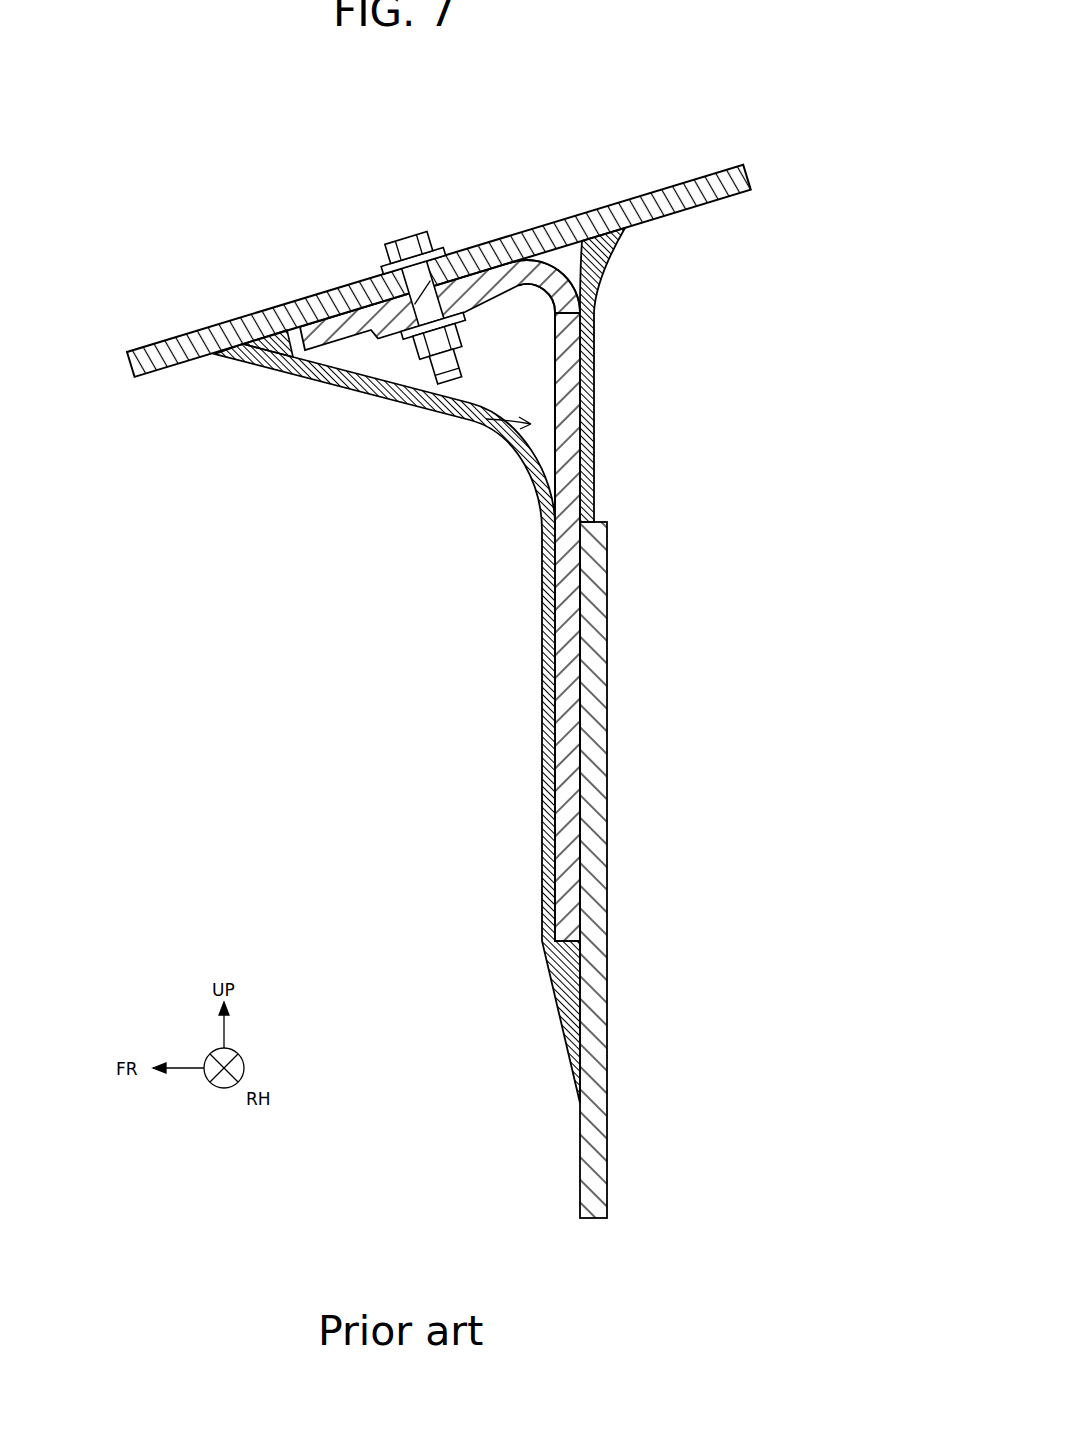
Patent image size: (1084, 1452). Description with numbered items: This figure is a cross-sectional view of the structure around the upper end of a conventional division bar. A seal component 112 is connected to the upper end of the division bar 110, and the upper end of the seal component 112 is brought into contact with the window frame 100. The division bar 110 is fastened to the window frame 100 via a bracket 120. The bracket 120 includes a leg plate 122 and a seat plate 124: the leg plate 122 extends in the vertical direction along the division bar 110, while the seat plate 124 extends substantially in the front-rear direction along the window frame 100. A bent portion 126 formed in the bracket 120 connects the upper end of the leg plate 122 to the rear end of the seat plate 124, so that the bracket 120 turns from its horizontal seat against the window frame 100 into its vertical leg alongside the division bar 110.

The window frame 100 is at (668, 197).
The division bar 110 is at (598, 678).
The seal component 112 is at (262, 358).
The bracket 120 is at (482, 418).
The leg plate 122 is at (560, 568).
The seat plate 124 is at (333, 333).
The bent portion 126 is at (568, 280).